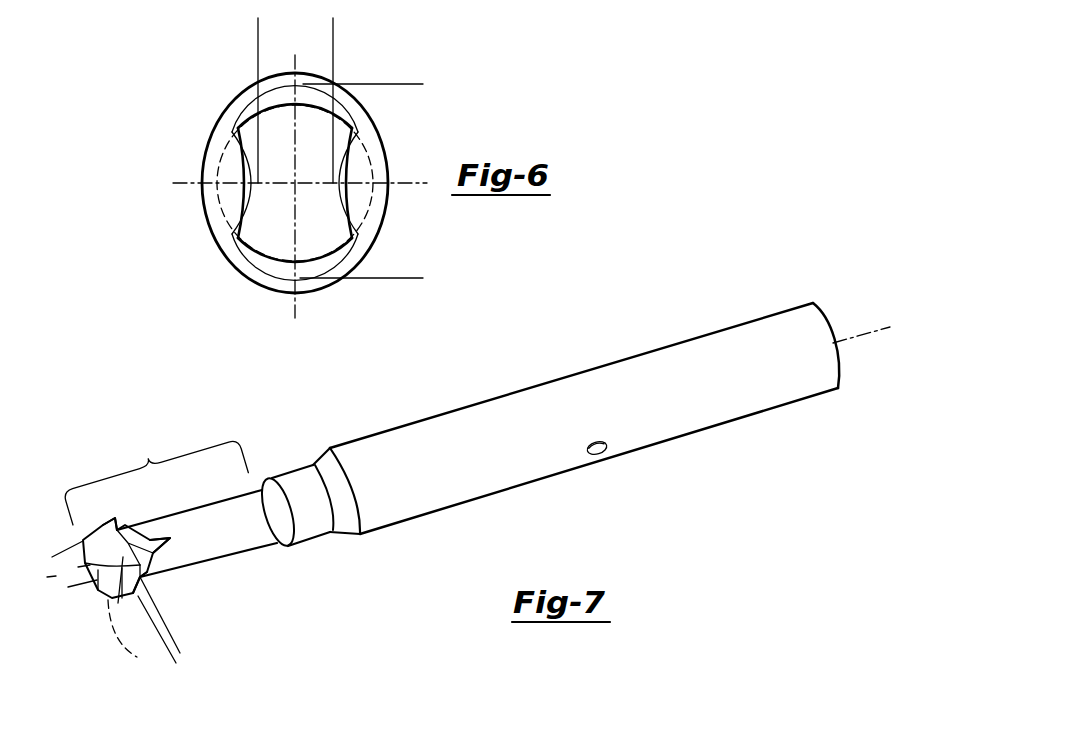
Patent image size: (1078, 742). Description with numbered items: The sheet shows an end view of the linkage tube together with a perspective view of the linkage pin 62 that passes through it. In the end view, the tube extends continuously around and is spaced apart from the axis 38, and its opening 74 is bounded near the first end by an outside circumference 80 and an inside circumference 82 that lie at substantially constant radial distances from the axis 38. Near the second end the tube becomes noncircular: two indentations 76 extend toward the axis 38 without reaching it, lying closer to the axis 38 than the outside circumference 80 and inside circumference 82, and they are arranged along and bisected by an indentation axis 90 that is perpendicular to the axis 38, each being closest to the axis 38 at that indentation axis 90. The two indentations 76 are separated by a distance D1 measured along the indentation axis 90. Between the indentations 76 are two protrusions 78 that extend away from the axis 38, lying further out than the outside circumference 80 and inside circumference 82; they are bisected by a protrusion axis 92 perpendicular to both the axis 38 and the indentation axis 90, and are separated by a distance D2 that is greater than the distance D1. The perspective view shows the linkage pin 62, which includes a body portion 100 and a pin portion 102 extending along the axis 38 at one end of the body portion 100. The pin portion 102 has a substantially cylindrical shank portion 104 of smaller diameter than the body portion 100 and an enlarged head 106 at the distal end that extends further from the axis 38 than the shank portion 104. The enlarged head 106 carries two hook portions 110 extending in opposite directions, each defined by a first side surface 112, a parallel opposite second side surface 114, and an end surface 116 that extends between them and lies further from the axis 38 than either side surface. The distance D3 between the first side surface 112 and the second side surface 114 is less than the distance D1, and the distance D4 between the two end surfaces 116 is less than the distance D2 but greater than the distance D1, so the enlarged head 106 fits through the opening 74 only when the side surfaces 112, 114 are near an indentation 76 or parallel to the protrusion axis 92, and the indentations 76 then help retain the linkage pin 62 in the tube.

In FIG. 6, the axis 38 is at (295, 183).
In FIG. 7, the axis 38 is at (882, 327).
In FIG. 7, the linkage pin 62 is at (645, 435).
In FIG. 6, the opening 74 is at (295, 118).
In FIG. 6, the indentation 76 is at (333, 200).
In FIG. 6, the protrusion 78 is at (300, 73).
In FIG. 6, the outside circumference 80 is at (207, 218).
In FIG. 6, the inside circumference 82 is at (305, 257).
In FIG. 6, the indentation axis 90 is at (201, 178).
In FIG. 6, the protrusion axis 92 is at (293, 294).
In FIG. 7, the body portion 100 is at (517, 407).
In FIG. 7, the pin portion 102 is at (154, 514).
In FIG. 7, the shank portion 104 is at (232, 499).
In FIG. 7, the enlarged head 106 is at (92, 588).
In FIG. 7, the hook portion 110 is at (177, 537).
In FIG. 7, the first side surface 112 is at (131, 594).
In FIG. 7, the second side surface 114 is at (135, 639).
In FIG. 7, the end surface 116 is at (104, 519).
In FIG. 6, the distance D1 is at (332, 25).
In FIG. 6, the distance D2 is at (413, 277).
In FIG. 7, the distance D3 is at (175, 700).
In FIG. 7, the distance D4 is at (45, 535).